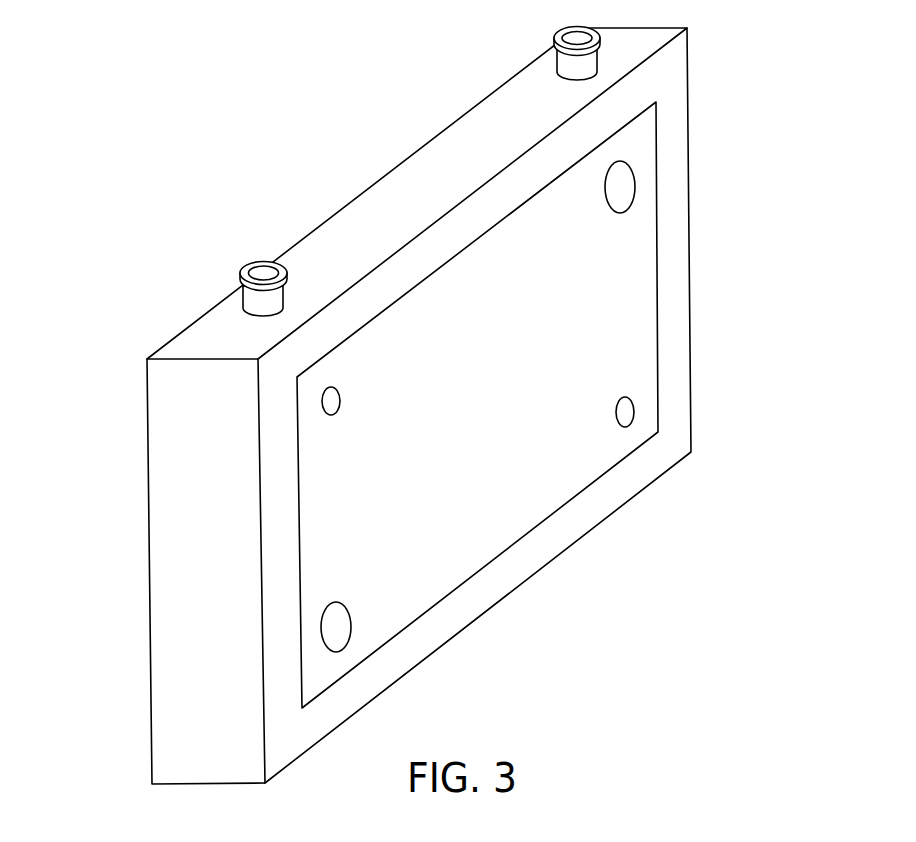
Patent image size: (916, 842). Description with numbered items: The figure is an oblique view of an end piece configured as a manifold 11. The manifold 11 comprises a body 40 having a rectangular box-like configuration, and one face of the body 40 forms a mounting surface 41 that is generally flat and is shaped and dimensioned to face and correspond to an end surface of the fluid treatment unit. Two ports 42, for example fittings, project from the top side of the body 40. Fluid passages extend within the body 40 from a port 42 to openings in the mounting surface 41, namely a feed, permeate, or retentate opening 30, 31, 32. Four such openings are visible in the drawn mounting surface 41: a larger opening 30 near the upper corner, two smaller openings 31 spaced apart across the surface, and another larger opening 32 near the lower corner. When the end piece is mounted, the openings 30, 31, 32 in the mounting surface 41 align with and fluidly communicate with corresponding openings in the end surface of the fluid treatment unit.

The manifold 11 is at (419, 406).
The body 40 is at (393, 207).
The mounting surface 41 is at (520, 330).
The port 42 is at (553, 38).
The feed opening 30 is at (620, 187).
The permeate opening 31 is at (625, 412).
The retentate opening 32 is at (323, 632).